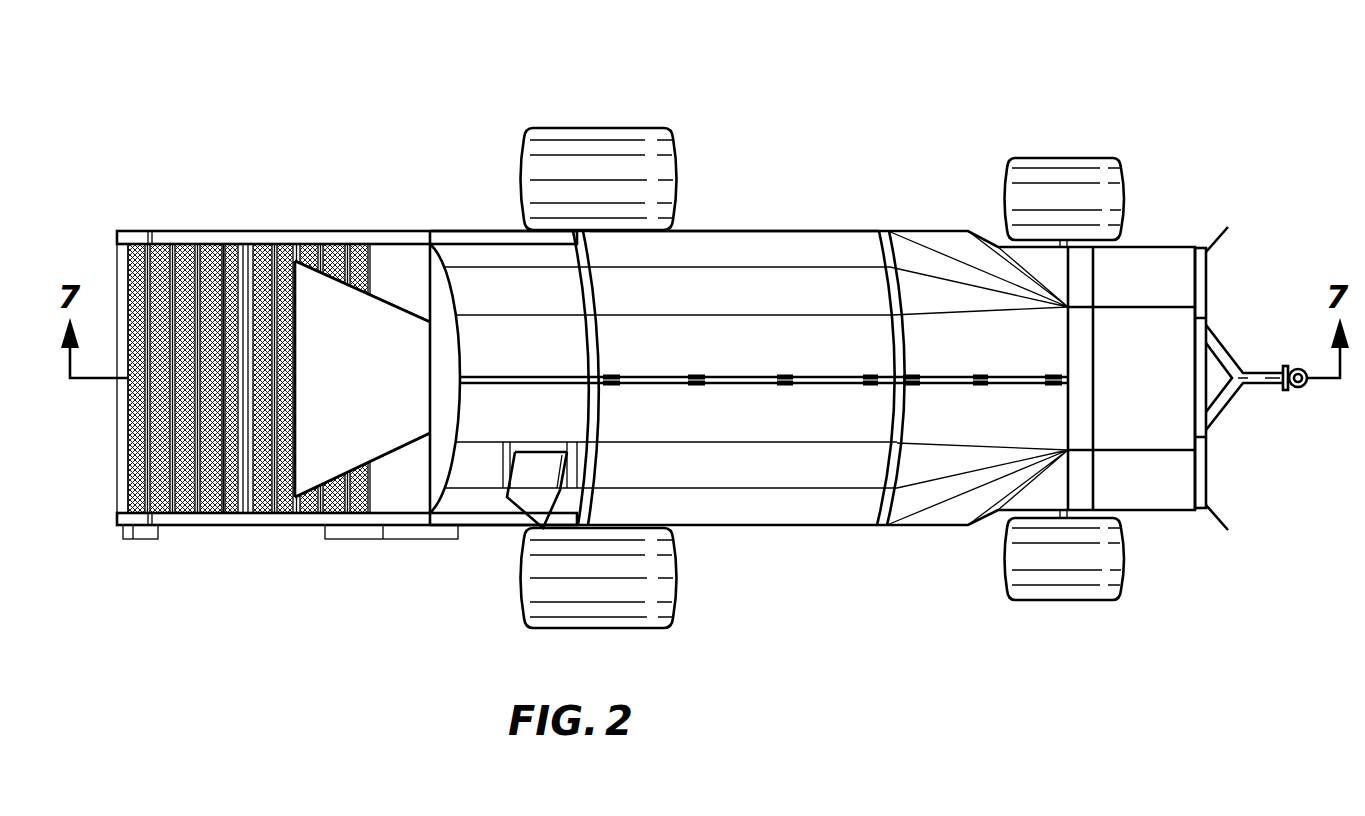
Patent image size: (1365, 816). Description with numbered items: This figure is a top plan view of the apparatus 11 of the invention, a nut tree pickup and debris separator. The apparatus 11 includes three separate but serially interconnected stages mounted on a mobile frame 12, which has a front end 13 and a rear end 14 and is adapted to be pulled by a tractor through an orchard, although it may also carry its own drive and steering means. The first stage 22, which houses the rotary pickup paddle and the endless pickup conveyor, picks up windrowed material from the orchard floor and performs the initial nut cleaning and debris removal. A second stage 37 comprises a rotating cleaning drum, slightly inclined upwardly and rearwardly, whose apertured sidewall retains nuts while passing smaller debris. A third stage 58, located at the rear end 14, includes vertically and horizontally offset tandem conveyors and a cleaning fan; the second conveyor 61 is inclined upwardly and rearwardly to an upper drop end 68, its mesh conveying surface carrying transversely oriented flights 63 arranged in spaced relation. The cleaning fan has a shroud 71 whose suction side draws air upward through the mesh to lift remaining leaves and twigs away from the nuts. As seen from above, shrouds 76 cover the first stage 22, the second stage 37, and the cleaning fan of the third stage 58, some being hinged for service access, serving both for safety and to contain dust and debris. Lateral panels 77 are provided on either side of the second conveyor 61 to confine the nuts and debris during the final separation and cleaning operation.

The apparatus 11 is at (897, 93).
The mobile frame 12 is at (723, 527).
The front end 13 is at (1157, 512).
The rear end 14 is at (478, 528).
The first stage 22 is at (1162, 220).
The second stage 37 is at (812, 229).
The third stage 58 is at (368, 178).
The second conveyor 61 is at (128, 485).
The flights 63 is at (168, 262).
The upper drop end 68 is at (117, 237).
The shroud 71 is at (390, 250).
The shrouds 76 is at (496, 234).
The lateral panels 77 is at (217, 231).